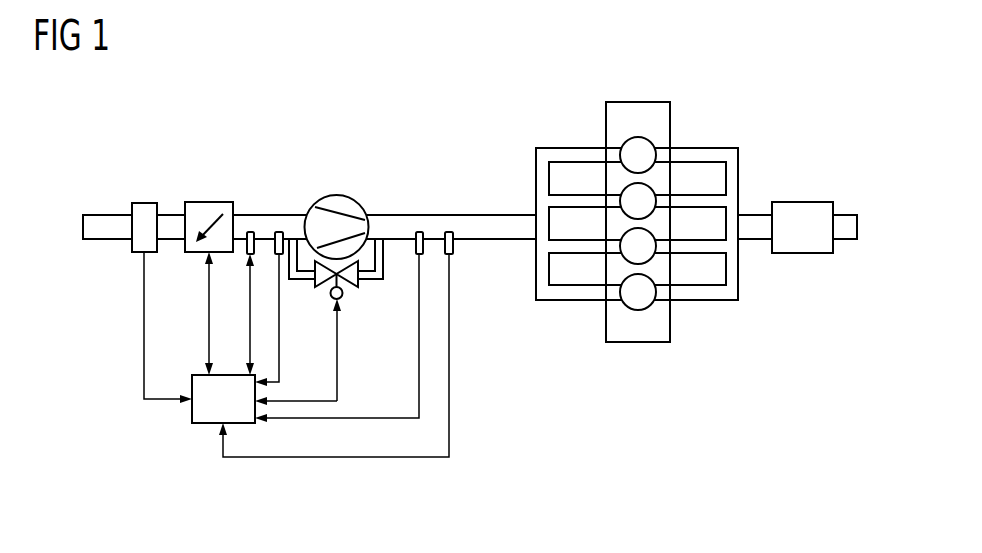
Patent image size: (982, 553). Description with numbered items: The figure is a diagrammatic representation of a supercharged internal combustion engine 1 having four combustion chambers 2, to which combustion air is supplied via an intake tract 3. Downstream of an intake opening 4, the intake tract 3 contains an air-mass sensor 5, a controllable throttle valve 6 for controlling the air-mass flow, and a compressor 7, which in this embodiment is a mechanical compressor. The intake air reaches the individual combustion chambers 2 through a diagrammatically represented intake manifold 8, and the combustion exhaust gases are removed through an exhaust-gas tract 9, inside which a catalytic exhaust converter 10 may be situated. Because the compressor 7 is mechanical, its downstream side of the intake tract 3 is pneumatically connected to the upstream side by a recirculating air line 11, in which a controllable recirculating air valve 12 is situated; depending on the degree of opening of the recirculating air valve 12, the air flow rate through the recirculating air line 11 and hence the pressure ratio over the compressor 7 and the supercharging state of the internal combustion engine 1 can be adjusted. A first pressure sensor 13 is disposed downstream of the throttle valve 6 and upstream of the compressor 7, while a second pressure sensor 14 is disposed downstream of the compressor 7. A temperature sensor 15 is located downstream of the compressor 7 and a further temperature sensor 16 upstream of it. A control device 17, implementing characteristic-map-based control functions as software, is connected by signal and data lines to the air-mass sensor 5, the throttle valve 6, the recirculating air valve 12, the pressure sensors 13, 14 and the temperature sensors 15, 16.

The internal combustion engine 1 is at (744, 74).
The combustion chambers 2 is at (637, 146).
The intake tract 3 is at (176, 184).
The intake opening 4 is at (69, 214).
The air-mass sensor 5 is at (145, 203).
The controllable throttle valve 6 is at (213, 202).
The compressor 7 is at (337, 196).
The intake manifold 8 is at (565, 156).
The exhaust-gas tract 9 is at (841, 186).
The catalytic exhaust converter 10 is at (805, 208).
The recirculating air line 11 is at (376, 280).
The controllable recirculating air valve 12 is at (346, 284).
The first pressure sensor 13 is at (250, 232).
The second pressure sensor 14 is at (420, 232).
The temperature sensor 15 is at (449, 232).
The further temperature sensor 16 is at (280, 232).
The control device 17 is at (207, 425).